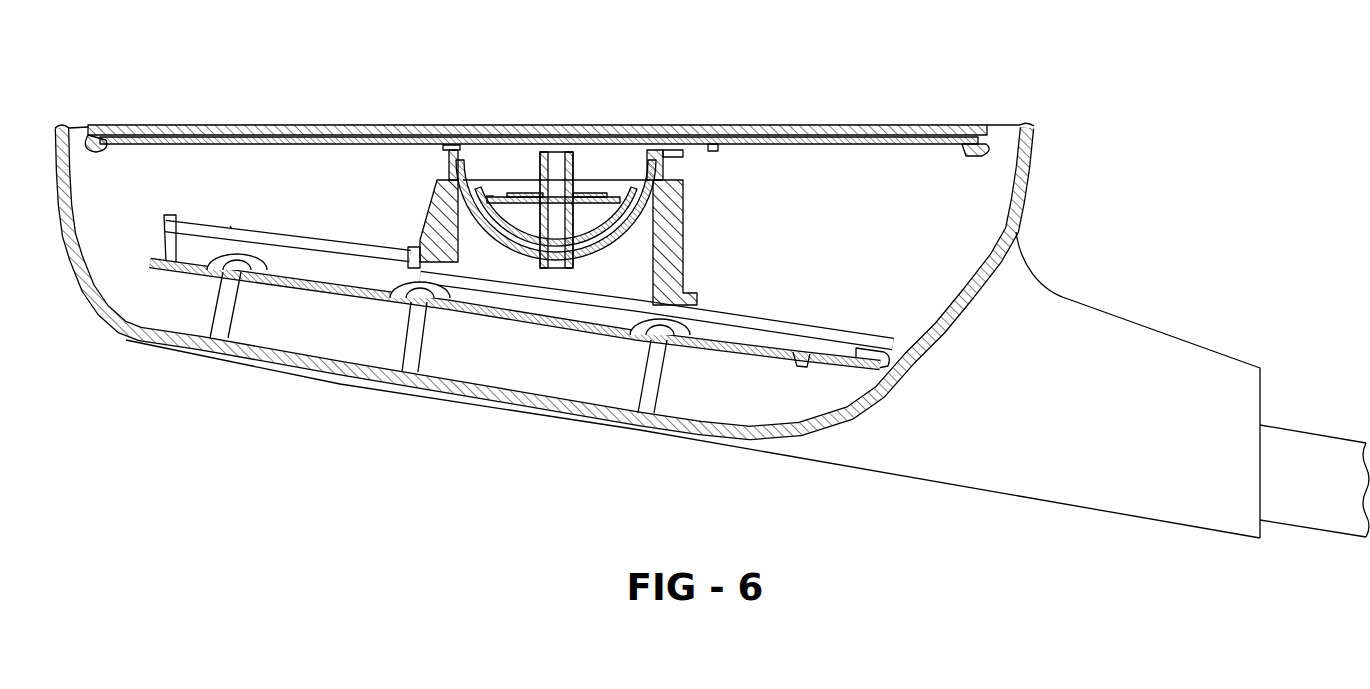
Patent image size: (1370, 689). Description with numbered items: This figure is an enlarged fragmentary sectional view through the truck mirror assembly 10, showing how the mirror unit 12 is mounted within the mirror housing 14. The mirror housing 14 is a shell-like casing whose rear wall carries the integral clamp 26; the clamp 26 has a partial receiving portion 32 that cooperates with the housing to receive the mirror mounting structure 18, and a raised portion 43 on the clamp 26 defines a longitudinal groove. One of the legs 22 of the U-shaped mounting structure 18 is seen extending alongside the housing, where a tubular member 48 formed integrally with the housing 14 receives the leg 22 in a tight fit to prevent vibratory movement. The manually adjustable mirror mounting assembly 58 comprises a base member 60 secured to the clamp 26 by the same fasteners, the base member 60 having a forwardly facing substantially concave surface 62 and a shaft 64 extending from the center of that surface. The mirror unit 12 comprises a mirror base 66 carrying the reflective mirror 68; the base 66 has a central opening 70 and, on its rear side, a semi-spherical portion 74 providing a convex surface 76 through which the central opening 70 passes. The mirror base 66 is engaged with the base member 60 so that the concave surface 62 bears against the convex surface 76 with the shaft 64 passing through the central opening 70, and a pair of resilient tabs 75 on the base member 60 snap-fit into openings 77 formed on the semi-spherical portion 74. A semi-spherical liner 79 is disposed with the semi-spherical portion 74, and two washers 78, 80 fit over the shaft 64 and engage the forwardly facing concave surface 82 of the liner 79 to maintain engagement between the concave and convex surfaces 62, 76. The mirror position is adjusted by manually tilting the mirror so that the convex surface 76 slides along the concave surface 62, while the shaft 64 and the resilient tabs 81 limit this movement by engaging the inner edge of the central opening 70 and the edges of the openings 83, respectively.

The truck mirror assembly 10 is at (1142, 225).
The mirror unit 12 is at (537, 81).
The mirror housing 14 is at (388, 395).
The mirror mounting structure 18 is at (1300, 418).
The legs 22 is at (527, 378).
The clamp 26 is at (770, 324).
The partial receiving portions 32 is at (255, 243).
The raised portion 43 is at (240, 226).
The tubular members 48 is at (1114, 510).
The mirror mounting assembly 58 is at (760, 262).
The base member 60 is at (685, 238).
The concave surface 62 is at (496, 195).
The shaft 64 is at (578, 198).
The mirror base 66 is at (930, 128).
The reflective mirror 68 is at (328, 125).
The central opening 70 is at (572, 320).
The semi-spherical portion 74 is at (648, 142).
The resilient tabs 75 is at (449, 152).
The convex surface 76 is at (418, 302).
The openings 77 is at (490, 195).
The washer 78 is at (540, 205).
The semi-spherical liner 79 is at (445, 200).
The washer 80 is at (578, 241).
The resilient tabs 81 is at (663, 160).
The concave surface 82 is at (515, 258).
The openings 83 is at (652, 168).